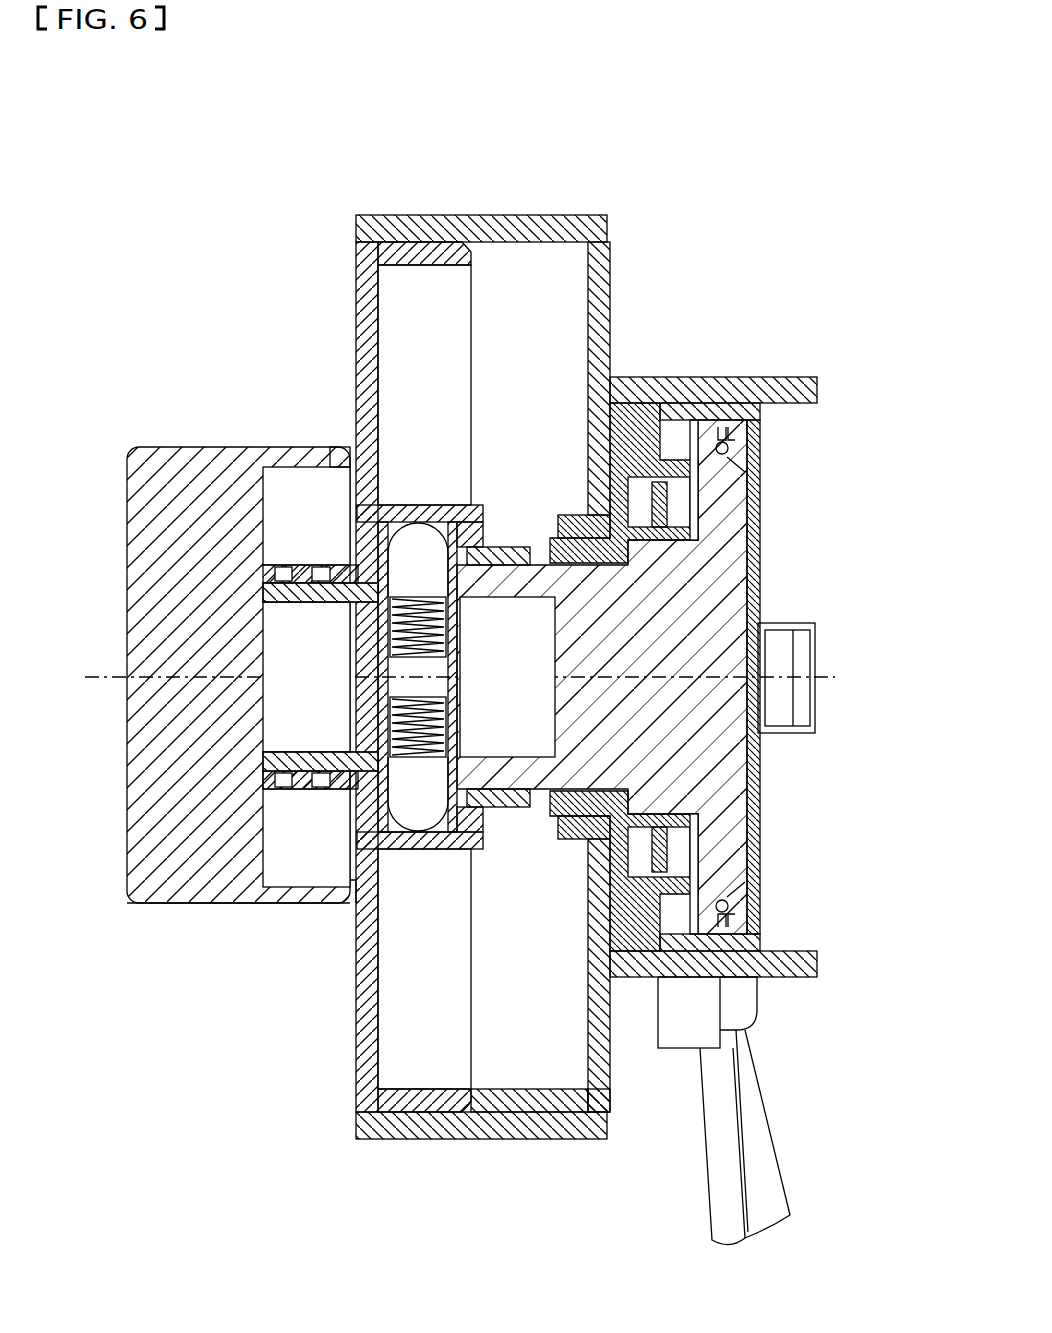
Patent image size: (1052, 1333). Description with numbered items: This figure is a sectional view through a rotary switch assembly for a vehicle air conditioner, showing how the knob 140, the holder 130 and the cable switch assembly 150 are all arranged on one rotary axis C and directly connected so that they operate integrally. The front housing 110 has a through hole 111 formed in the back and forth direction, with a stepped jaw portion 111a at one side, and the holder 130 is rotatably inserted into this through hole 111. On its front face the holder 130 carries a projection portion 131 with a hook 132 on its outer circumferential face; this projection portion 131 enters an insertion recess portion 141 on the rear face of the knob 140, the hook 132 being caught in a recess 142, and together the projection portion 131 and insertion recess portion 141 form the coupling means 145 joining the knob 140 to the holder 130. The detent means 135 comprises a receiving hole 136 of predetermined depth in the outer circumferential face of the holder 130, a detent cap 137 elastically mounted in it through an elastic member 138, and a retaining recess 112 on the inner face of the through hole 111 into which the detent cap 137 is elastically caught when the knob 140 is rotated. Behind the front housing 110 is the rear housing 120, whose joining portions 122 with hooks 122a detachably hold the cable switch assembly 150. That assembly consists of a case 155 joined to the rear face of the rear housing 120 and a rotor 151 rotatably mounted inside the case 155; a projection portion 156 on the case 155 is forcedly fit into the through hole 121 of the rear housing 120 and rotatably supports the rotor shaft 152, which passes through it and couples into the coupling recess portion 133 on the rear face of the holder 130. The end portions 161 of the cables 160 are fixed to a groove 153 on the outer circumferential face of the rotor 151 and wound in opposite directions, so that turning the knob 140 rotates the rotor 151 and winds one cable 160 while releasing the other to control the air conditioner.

The front housing 110 is at (356, 1056).
The through hole 111 is at (420, 1139).
The stepped jaw portion 111a is at (238, 904).
The retaining recess 112 is at (355, 912).
The rear housing 120 is at (497, 1139).
The through hole 121 is at (485, 800).
The joining portion 122 is at (710, 977).
The hook 122a is at (760, 950).
The holder 130 is at (335, 566).
The projection portion 131 is at (250, 566).
The hook 132 is at (303, 568).
The coupling recess portion 133 is at (425, 835).
The detent means 135 is at (533, 152).
The receiving hole 136 is at (420, 550).
The detent cap 137 is at (432, 580).
The elastic member 138 is at (496, 560).
The knob 140 is at (178, 500).
The insertion recess portion 141 is at (290, 775).
The recess 142 is at (300, 803).
The coupling means 145 is at (305, 818).
The cable switch assembly 150 is at (770, 580).
The rotor 151 is at (700, 742).
The rotor shaft 152 is at (578, 515).
The groove 153 is at (730, 450).
The case 155 is at (745, 377).
The projection portion 156 is at (560, 470).
The cable 160 is at (796, 1184).
The end portion 161 is at (735, 462).
The rotary axis C is at (822, 672).